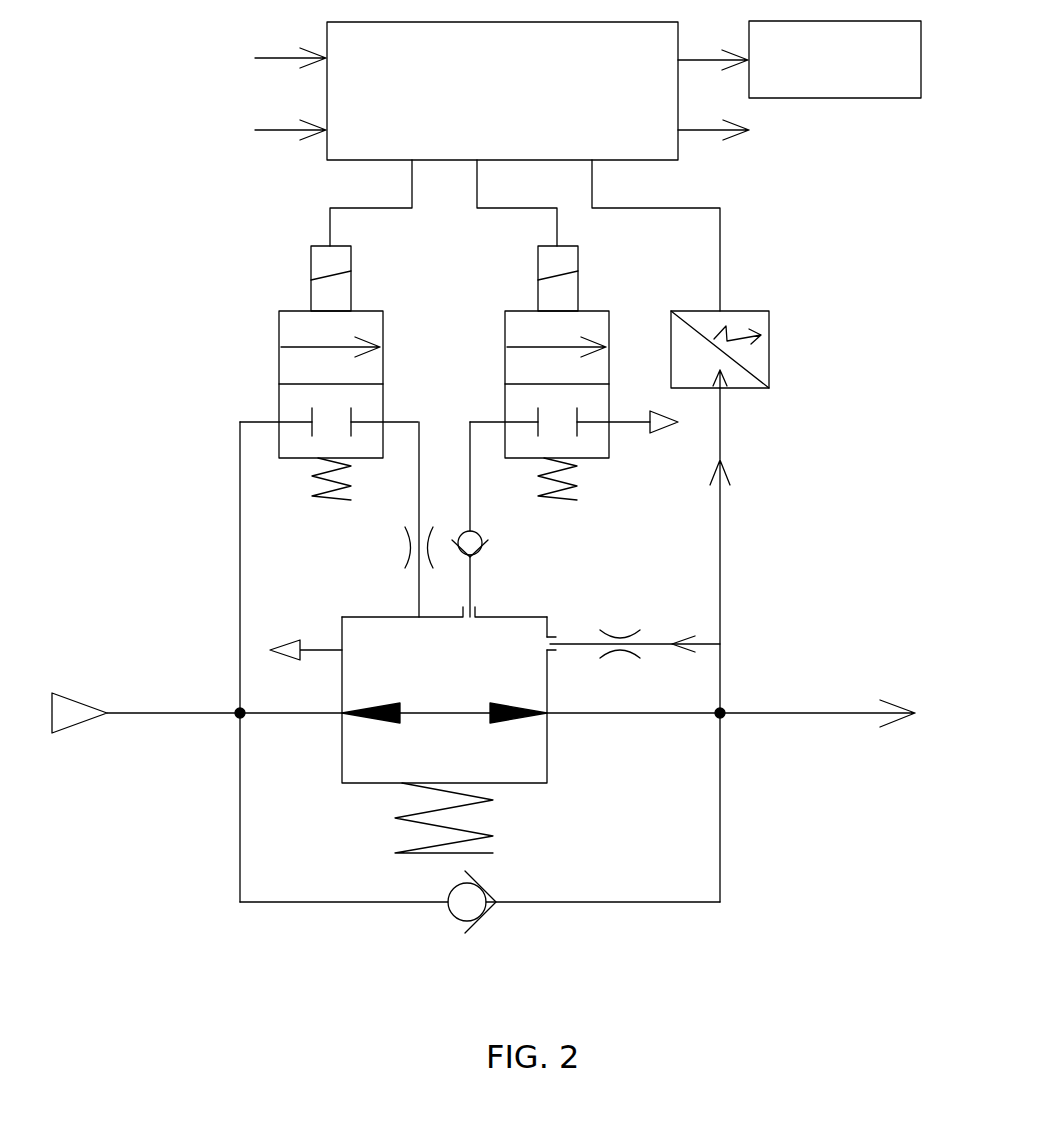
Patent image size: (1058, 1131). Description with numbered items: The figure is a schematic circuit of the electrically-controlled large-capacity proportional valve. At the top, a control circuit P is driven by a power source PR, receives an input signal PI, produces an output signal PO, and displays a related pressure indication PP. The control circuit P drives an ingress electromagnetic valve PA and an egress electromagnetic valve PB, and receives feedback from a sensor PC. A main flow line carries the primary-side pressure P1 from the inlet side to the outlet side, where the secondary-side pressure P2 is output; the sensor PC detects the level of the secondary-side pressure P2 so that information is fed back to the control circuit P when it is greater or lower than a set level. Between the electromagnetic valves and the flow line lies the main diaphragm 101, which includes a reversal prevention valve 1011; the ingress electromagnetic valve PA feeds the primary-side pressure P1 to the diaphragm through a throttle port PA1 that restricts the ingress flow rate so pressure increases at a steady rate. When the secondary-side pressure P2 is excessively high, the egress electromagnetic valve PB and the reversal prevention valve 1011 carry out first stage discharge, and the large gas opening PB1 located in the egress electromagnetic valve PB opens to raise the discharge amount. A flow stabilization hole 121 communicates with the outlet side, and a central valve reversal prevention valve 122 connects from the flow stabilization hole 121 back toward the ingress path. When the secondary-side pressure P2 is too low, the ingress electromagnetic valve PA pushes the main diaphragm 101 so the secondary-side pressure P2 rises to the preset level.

The control circuit P is at (502, 91).
The power source PR is at (183, 66).
The input signal PI is at (202, 123).
The pressure indication PP is at (799, 59).
The output signal PO is at (810, 131).
The ingress electromagnetic valve PA is at (279, 364).
The egress electromagnetic valve PB is at (505, 364).
The large gas opening PB1 is at (662, 436).
The sensor PC is at (769, 363).
The throttle port PA1 is at (410, 530).
The reversal prevention valve 1011 is at (480, 532).
The main diaphragm 101 is at (484, 617).
The flow stabilization hole 121 is at (610, 652).
The central valve reversal prevention valve 122 is at (483, 917).
The primary-side pressure P1 is at (212, 713).
The secondary-side pressure P2 is at (735, 714).